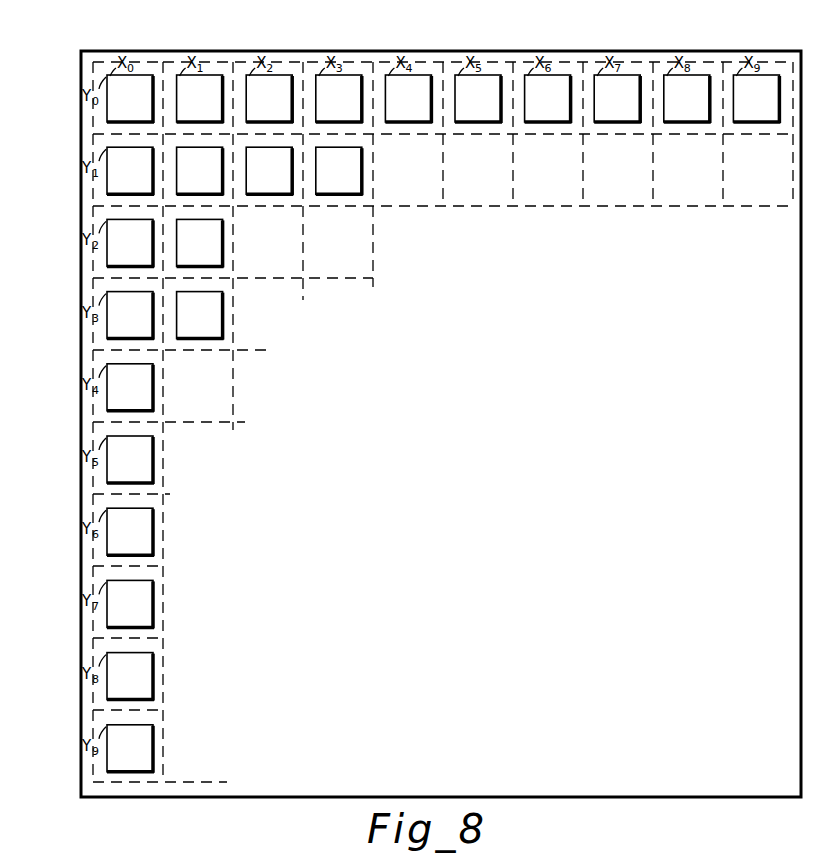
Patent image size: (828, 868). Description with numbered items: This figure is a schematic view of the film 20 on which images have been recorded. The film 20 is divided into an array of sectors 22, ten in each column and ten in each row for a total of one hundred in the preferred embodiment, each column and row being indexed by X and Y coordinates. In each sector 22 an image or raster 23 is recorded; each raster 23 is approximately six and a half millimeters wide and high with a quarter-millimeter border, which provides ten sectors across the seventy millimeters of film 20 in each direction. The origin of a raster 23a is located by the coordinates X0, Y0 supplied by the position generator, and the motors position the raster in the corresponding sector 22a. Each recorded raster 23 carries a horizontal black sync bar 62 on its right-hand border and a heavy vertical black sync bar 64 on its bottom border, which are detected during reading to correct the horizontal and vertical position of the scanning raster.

The film 20 is at (658, 800).
The sector 22 is at (443, 395).
The sector 22a is at (148, 62).
The raster 23 is at (399, 392).
The raster 23a is at (107, 89).
The horizontal black sync bar 62 is at (151, 76).
The vertical black sync bar 64 is at (124, 124).